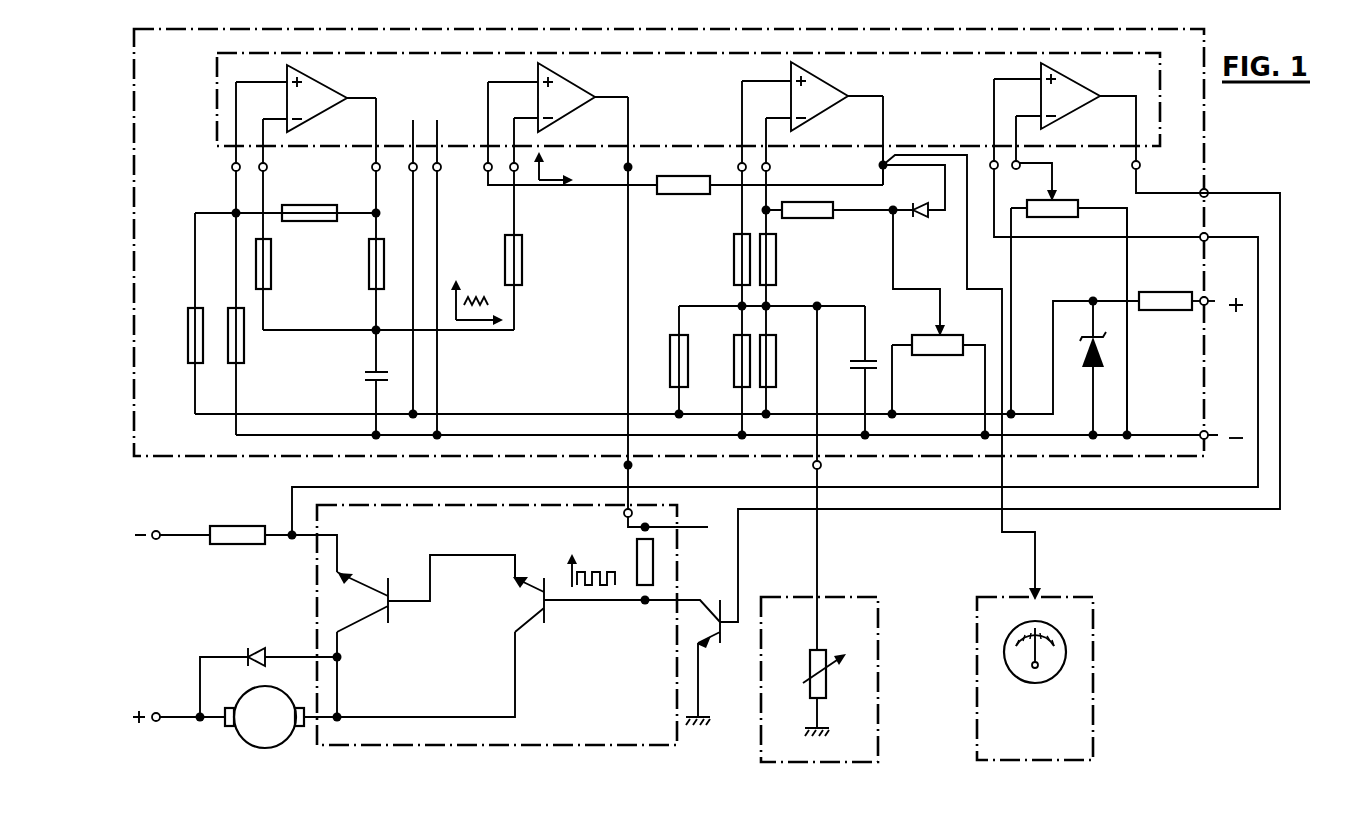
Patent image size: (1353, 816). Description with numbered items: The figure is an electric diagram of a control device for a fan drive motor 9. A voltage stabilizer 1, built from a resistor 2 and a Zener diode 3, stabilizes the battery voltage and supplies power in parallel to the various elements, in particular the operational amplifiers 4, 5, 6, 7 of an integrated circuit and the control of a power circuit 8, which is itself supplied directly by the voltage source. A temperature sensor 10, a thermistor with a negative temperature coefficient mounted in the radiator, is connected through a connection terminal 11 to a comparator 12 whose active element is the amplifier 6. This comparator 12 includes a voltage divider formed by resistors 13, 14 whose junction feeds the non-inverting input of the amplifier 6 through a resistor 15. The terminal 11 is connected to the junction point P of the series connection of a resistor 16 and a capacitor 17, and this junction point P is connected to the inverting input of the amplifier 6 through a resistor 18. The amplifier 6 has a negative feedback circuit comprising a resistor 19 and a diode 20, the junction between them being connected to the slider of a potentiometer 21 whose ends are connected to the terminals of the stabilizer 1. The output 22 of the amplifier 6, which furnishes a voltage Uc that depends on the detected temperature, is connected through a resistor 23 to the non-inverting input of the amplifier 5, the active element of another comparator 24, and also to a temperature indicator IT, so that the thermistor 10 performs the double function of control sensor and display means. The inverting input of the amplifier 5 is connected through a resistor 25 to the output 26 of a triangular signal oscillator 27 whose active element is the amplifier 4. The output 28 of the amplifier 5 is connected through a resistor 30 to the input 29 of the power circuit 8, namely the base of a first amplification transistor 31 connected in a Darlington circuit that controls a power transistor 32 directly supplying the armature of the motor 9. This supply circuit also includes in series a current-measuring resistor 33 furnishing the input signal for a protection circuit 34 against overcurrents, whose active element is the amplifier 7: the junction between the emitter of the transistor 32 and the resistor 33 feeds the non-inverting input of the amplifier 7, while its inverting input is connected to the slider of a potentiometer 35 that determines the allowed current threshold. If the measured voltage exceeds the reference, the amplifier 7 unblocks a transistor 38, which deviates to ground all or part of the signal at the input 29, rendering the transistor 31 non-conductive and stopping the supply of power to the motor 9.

The voltage stabilizer 1 is at (1135, 322).
The resistor 2 is at (1175, 300).
The Zener diode 3 is at (1091, 361).
The operational amplifier 4 is at (317, 96).
The operational amplifier 5 is at (565, 96).
The operational amplifier 6 is at (818, 98).
The operational amplifier 7 is at (1063, 96).
The power circuit 8 is at (541, 637).
The drive motor 9 is at (254, 731).
The temperature sensor 10 is at (878, 669).
The connection terminal 11 is at (821, 466).
The comparator 12 is at (812, 291).
The resistor 13 is at (737, 375).
The resistor 14 is at (674, 375).
The resistor 15 is at (738, 268).
The resistor 16 is at (771, 378).
The capacitor 17 is at (851, 365).
The resistor 18 is at (771, 268).
The resistor 19 is at (818, 214).
The diode 20 is at (921, 213).
The potentiometer 21 is at (925, 356).
The output 22 is at (883, 165).
The resistor 23 is at (683, 192).
The comparator 24 is at (581, 263).
The resistor 25 is at (517, 250).
The output 26 is at (376, 330).
The triangular signal oscillator 27 is at (300, 340).
The output 28 is at (628, 167).
The input 29 is at (645, 605).
The resistor 30 is at (641, 563).
The first amplification transistor 31 is at (530, 578).
The power transistor 32 is at (360, 616).
The current-measuring resistor 33 is at (222, 538).
The protection circuit 34 is at (1152, 228).
The potentiometer 35 is at (1065, 211).
The transistor 38 is at (712, 632).
The junction point P is at (769, 307).
The voltage Uc is at (868, 74).
The temperature indicator IT is at (1093, 679).